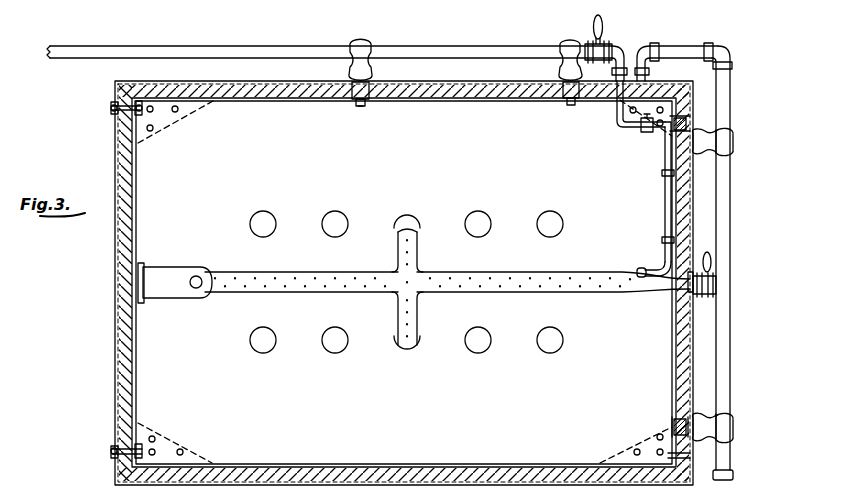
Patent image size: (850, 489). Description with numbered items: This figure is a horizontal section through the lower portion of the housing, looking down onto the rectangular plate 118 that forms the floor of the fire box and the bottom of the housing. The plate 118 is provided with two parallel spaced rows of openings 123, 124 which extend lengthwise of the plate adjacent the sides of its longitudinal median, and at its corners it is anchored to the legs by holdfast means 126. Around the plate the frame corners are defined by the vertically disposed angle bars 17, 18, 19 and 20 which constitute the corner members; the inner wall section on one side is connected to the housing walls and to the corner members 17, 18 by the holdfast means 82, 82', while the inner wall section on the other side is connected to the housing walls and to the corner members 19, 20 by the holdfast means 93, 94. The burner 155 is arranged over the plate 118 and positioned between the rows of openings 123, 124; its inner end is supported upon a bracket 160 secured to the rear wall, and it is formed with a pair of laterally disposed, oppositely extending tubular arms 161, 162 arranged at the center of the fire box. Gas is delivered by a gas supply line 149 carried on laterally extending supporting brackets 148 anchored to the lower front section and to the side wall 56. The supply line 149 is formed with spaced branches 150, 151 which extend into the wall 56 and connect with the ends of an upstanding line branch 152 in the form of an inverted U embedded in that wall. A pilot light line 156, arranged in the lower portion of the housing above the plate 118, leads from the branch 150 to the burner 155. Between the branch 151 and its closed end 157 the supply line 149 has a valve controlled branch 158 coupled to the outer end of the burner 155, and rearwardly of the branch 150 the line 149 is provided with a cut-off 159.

The gas supply line 149 is at (154, 37).
The supporting brackets 148 is at (362, 42).
The side wall 56 is at (455, 93).
The cut-off 159 is at (592, 27).
The branch 150 is at (630, 70).
The branch 151 is at (641, 62).
The holdfast means 94 is at (118, 124).
The corner member 20 is at (172, 120).
The line branch 152 is at (618, 102).
The corner member 19 is at (640, 134).
The holdfast means 93 is at (695, 125).
The pilot light line 156 is at (665, 190).
The bracket 160 is at (167, 272).
The tubular arm 161 is at (399, 247).
The row of spaced openings 124 is at (548, 222).
The burner 155 is at (507, 275).
The tubular arm 162 is at (412, 322).
The rectangular plate 118 is at (404, 282).
The row of spaced openings 123 is at (549, 352).
The holdfast means 82' is at (106, 430).
The corner member 18 is at (150, 462).
The holdfast means 126 is at (181, 450).
The corner member 17 is at (662, 460).
The holdfast means 82 is at (660, 408).
The valve controlled branch 158 is at (707, 295).
The closed end 157 is at (733, 475).